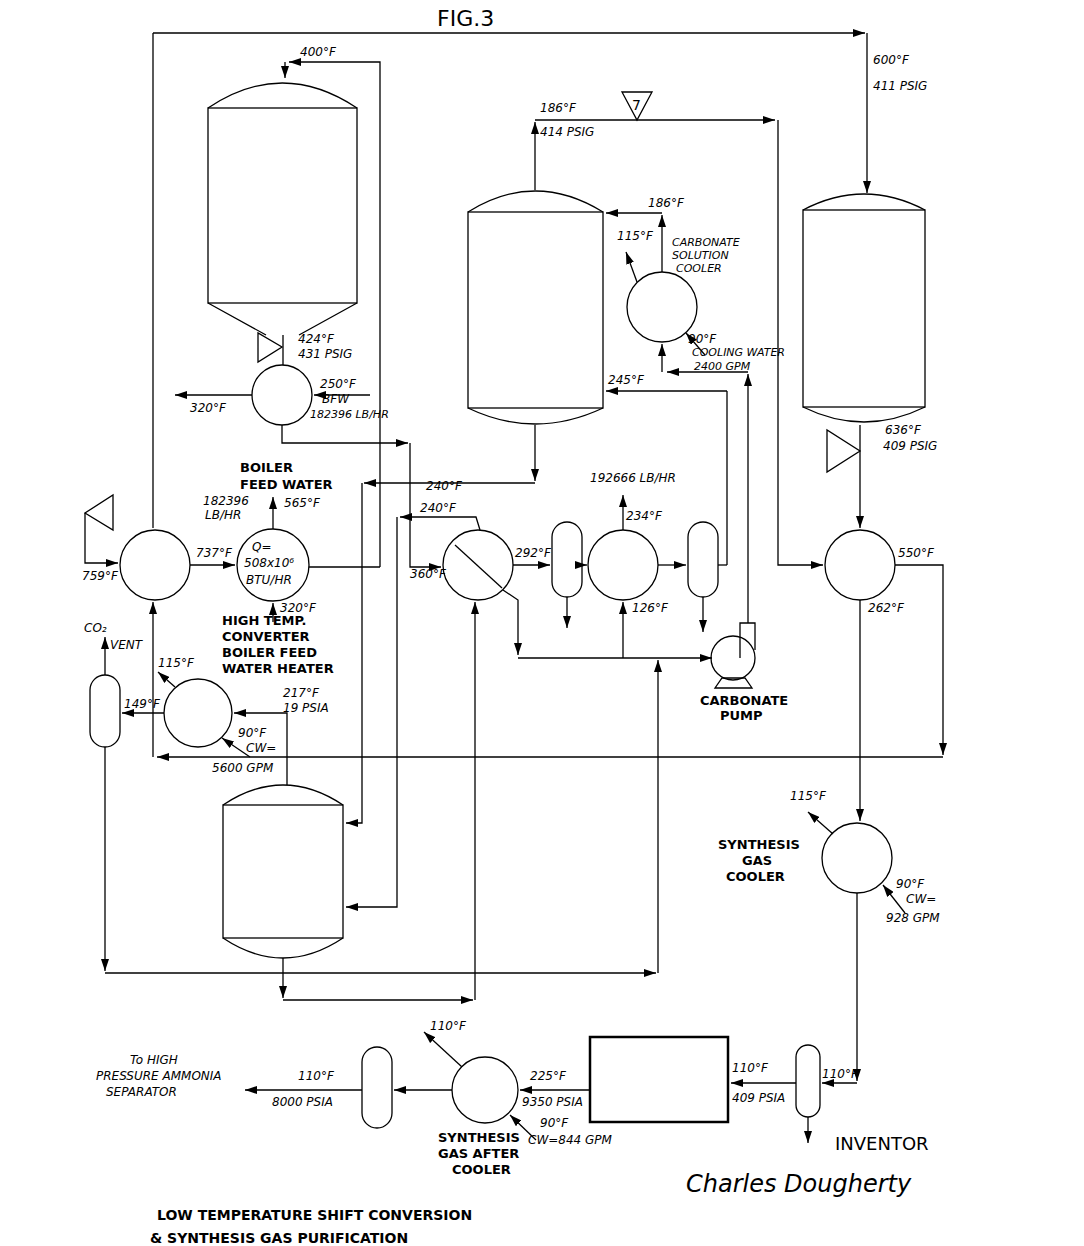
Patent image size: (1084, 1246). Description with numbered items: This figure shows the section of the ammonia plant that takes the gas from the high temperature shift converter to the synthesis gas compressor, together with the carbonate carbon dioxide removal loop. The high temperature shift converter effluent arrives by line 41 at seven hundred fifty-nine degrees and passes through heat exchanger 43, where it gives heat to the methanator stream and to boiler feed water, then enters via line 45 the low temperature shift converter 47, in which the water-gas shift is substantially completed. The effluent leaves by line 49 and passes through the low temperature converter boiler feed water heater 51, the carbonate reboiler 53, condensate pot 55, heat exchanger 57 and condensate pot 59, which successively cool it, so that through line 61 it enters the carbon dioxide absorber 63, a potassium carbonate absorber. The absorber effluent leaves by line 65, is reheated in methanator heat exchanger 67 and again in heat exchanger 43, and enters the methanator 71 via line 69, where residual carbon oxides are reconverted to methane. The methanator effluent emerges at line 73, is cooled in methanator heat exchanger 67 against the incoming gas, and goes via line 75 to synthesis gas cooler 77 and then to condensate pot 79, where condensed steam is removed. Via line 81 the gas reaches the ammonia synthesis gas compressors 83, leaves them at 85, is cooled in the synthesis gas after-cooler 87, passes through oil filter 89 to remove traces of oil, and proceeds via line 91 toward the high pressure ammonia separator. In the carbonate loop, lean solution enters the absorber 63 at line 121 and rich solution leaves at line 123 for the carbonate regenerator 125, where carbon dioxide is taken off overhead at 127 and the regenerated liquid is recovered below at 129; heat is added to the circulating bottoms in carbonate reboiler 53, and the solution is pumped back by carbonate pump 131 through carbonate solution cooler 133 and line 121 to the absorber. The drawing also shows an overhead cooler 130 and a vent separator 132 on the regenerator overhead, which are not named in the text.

The line 41 is at (86, 560).
The heat exchanger 43 is at (133, 590).
The line 45 is at (280, 72).
The low temperature shift converter 47 is at (208, 200).
The line 49 is at (262, 368).
The low temperature converter boiler feed water heater 51 is at (262, 420).
The carbonate reboiler 53 is at (494, 534).
The condensate pot 55 is at (565, 520).
The heat exchanger 57 is at (600, 592).
The condensate pot 59 is at (700, 530).
The line 61 is at (684, 393).
The carbon dioxide absorber 63 is at (468, 314).
The line 65 is at (536, 180).
The methanator heat exchanger 67 is at (883, 545).
The line 69 is at (870, 148).
The methanator 71 is at (843, 200).
The line 73 is at (862, 472).
The line 75 is at (862, 685).
The synthesis gas cooler 77 is at (886, 830).
The condensate pot 79 is at (815, 1042).
The line 81 is at (778, 1078).
The ammonia synthesis gas compressors 83 is at (668, 1040).
The compressor outlet 85 is at (578, 1084).
The synthesis gas after-cooler 87 is at (506, 1068).
The oil filter 89 is at (362, 1068).
The line 91 is at (272, 1080).
The line 121 is at (634, 223).
The line 123 is at (536, 435).
The carbonate regenerator 125 is at (223, 913).
The regenerator overhead 127 is at (288, 771).
The regenerator bottoms outlet 129 is at (275, 990).
The heat exchanger 130 is at (210, 680).
The carbonate pump 131 is at (752, 640).
The separator 132 is at (106, 825).
The carbonate solution cooler 133 is at (686, 283).